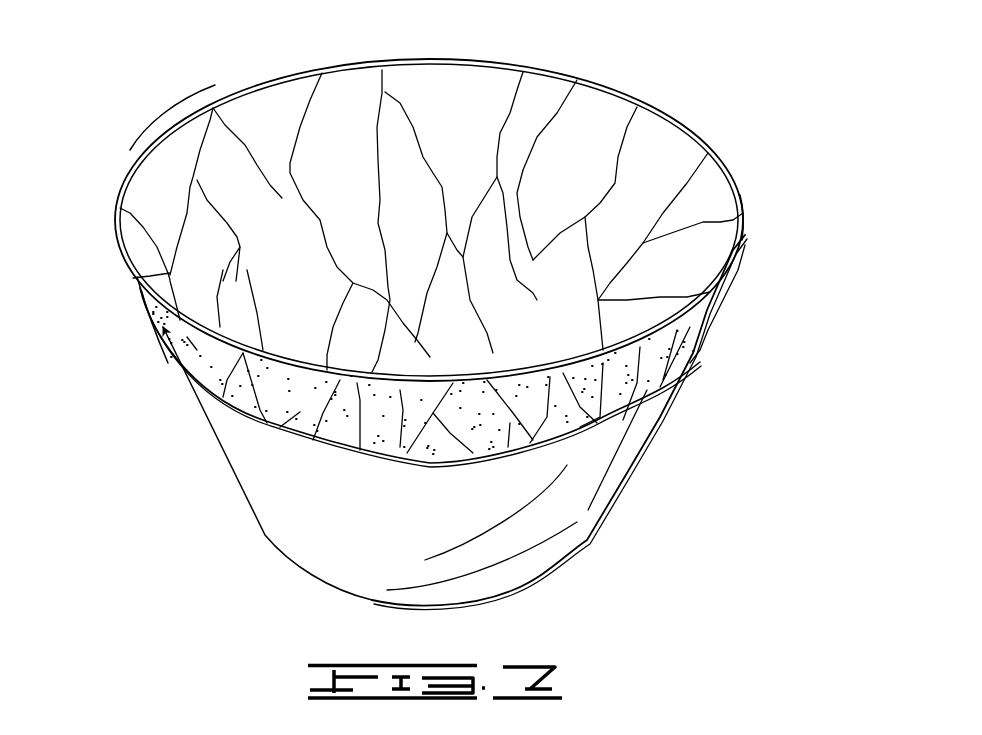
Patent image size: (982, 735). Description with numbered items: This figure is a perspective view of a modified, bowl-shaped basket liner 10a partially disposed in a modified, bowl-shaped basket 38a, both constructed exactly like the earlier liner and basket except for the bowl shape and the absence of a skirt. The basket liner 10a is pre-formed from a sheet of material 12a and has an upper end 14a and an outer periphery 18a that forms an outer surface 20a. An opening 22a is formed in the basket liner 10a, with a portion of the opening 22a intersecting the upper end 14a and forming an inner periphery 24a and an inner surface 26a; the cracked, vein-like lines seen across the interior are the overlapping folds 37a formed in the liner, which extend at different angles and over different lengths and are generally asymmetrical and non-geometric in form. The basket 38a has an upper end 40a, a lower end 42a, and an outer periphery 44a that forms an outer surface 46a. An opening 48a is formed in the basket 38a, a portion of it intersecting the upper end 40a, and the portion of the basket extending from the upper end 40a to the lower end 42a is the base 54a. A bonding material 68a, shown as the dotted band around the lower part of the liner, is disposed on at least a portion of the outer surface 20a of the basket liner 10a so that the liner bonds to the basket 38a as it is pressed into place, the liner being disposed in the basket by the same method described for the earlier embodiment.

The basket liner 10a is at (243, 78).
The sheet of material 12a is at (726, 160).
The upper end 14a is at (744, 211).
The outer periphery 18a is at (200, 351).
The outer surface 20a is at (300, 413).
The opening 22a is at (159, 138).
The inner periphery 24a is at (647, 137).
The inner surface 26a is at (593, 105).
The overlapping folds 37a is at (233, 377).
The basket 38a is at (630, 476).
The upper end 40a is at (708, 320).
The lower end 42a is at (404, 606).
The outer periphery 44a is at (260, 488).
The outer surface 46a is at (572, 535).
The opening 48a is at (690, 366).
The base 54a is at (292, 535).
The bonding material 68a is at (617, 390).